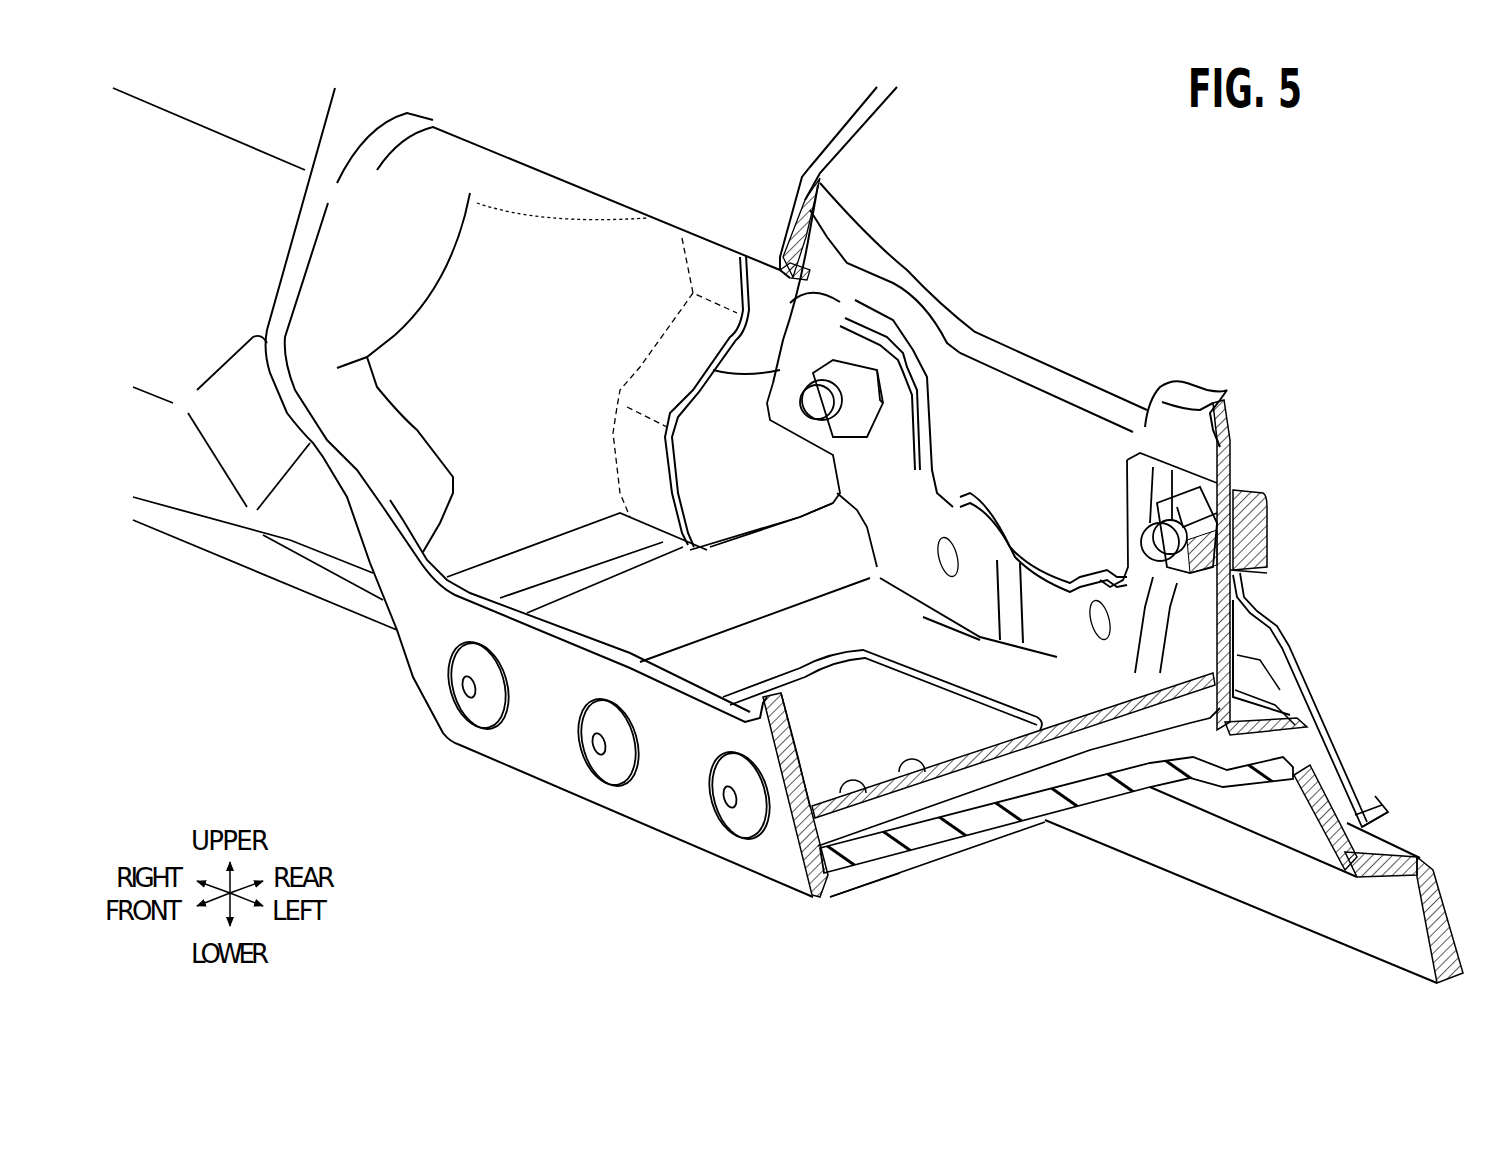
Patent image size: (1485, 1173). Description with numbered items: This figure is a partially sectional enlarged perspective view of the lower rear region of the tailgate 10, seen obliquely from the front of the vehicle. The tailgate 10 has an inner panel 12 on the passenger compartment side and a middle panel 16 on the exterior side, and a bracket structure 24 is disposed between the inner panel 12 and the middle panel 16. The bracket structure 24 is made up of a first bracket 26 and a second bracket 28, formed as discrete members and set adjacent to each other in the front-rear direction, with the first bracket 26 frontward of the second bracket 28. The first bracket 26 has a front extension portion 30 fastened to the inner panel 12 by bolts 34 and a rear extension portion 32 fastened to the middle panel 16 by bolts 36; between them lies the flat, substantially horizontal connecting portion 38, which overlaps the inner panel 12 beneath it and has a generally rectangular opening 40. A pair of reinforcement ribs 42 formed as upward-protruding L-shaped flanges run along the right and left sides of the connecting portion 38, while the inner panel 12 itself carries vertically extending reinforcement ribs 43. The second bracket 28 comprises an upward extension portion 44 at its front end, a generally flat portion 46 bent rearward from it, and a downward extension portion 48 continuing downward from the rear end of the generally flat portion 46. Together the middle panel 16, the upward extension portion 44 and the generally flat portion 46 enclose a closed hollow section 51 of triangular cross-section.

The tailgate 10 is at (1305, 363).
The inner panel 12 is at (967, 847).
The middle panel 16 is at (1290, 665).
The bracket structure 24 is at (1218, 912).
The first bracket 26 is at (997, 773).
The second bracket 28 is at (1300, 740).
The front extension portion 30 is at (803, 787).
The rear extension portion 32 is at (1237, 587).
The bolts 34 is at (470, 690).
The bolts 36 is at (813, 402).
The connecting portion 38 is at (797, 645).
The opening 40 is at (860, 787).
The reinforcement ribs 42 is at (640, 590).
The reinforcement ribs 43 is at (740, 378).
The upward extension portion 44 is at (1258, 635).
The generally flat portion 46 is at (1273, 723).
The downward extension portion 48 is at (1350, 783).
The closed hollow section 51 is at (1247, 690).